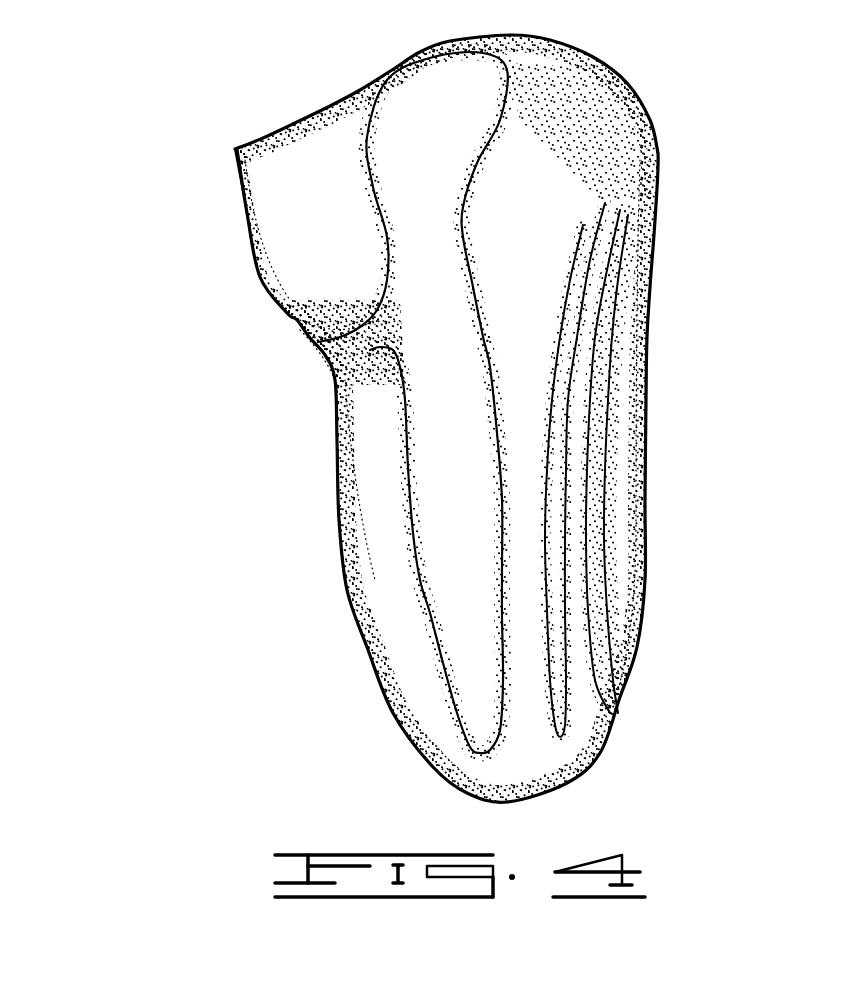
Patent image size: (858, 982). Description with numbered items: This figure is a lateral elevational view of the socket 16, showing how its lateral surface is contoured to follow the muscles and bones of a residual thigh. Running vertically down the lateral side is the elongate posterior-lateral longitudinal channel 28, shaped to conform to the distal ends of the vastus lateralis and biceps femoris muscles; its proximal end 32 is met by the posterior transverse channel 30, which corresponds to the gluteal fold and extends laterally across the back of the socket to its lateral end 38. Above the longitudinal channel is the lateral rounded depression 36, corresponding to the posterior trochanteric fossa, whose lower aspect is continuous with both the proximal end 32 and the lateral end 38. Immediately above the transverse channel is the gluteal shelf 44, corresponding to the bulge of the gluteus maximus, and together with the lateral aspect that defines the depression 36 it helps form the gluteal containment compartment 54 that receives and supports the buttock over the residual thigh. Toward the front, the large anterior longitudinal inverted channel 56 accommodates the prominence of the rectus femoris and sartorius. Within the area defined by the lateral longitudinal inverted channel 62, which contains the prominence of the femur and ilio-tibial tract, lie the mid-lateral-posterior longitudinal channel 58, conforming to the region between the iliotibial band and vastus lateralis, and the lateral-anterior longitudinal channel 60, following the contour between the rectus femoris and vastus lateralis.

The socket 16 is at (652, 82).
The elongate posterior-lateral longitudinal channel 28 is at (423, 493).
The posterior transverse channel 30 is at (337, 340).
The proximal end of the elongate posterior-lateral longitudinal channel 32 is at (433, 423).
The lateral rounded depression 36 is at (400, 92).
The lateral end of the posterior transverse channel 38 is at (382, 316).
The gluteal shelf 44 is at (270, 230).
The gluteal containment compartment 54 is at (226, 138).
The anterior longitudinal inverted channel 56 is at (620, 513).
The mid-lateral-posterior longitudinal channel 58 is at (593, 393).
The lateral-anterior longitudinal channel 60 is at (563, 362).
The lateral longitudinal inverted channel 62 is at (533, 333).